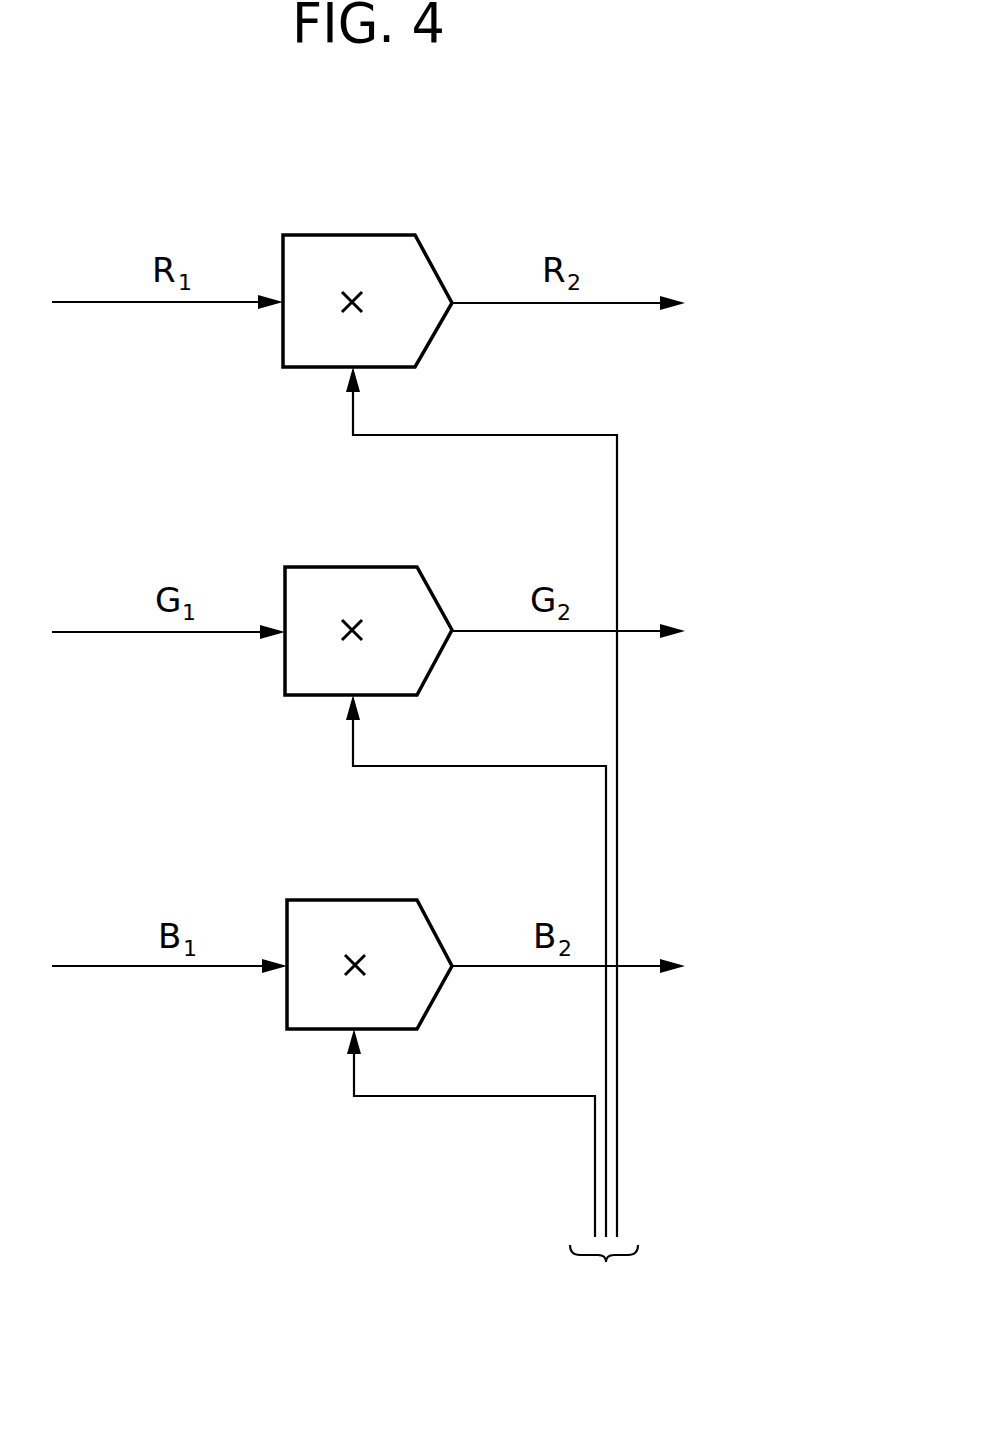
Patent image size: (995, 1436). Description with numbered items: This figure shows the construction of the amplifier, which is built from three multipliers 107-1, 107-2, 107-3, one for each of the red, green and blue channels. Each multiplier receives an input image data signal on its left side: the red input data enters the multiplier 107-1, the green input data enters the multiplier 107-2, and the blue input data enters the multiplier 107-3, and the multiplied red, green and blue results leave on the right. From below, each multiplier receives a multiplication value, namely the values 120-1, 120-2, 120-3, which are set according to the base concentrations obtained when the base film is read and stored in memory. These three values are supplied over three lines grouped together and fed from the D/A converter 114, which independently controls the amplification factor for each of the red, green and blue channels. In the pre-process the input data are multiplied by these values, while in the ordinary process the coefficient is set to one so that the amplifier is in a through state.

The multiplier 107-1 is at (378, 233).
The multiplier 107-2 is at (378, 566).
The multiplier 107-3 is at (375, 899).
The value according to base concentration 120-1 is at (505, 437).
The value according to base concentration 120-2 is at (512, 768).
The value according to base concentration 120-3 is at (510, 1098).
The D/A converter 114 is at (621, 1279).